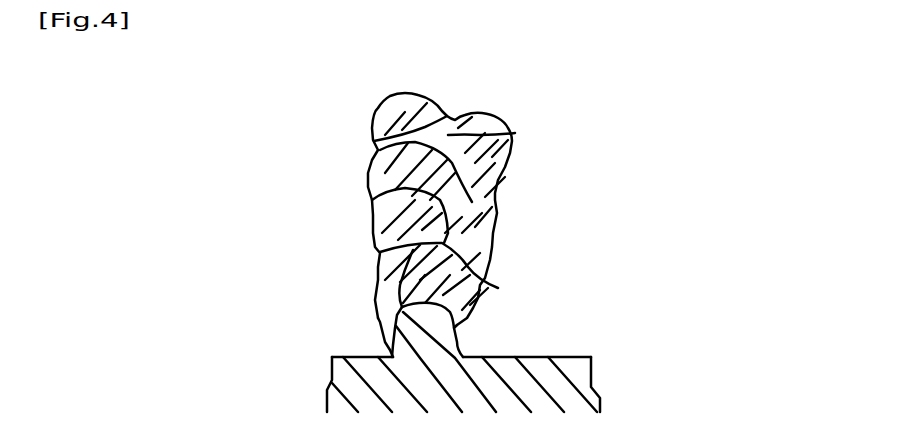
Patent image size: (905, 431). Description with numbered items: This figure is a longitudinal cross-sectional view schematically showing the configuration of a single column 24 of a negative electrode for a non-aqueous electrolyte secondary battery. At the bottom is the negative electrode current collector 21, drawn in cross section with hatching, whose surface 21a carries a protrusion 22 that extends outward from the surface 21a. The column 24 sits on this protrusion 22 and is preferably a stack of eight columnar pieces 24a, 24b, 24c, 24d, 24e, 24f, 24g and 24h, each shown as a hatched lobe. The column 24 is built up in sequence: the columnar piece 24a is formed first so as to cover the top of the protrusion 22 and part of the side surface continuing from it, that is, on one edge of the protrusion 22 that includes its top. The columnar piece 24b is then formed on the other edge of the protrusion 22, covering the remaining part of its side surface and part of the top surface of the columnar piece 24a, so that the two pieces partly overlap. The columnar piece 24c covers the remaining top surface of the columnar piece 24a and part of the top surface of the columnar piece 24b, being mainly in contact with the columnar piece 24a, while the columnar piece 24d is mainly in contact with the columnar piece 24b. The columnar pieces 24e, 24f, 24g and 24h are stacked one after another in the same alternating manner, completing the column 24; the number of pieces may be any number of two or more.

The negative electrode current collector 21 is at (568, 385).
The surface of the negative electrode current collector 21a is at (552, 357).
The protrusion 22 is at (388, 333).
The column 24 is at (586, 63).
The columnar piece 24a is at (498, 288).
The columnar piece 24b is at (398, 285).
The columnar piece 24c is at (458, 245).
The columnar piece 24d is at (495, 197).
The columnar piece 24e is at (447, 153).
The columnar piece 24f is at (515, 133).
The columnar piece 24g is at (448, 128).
The columnar piece 24h is at (410, 113).